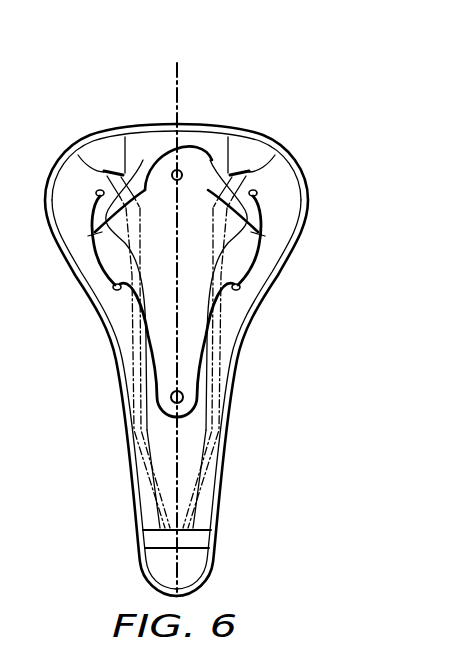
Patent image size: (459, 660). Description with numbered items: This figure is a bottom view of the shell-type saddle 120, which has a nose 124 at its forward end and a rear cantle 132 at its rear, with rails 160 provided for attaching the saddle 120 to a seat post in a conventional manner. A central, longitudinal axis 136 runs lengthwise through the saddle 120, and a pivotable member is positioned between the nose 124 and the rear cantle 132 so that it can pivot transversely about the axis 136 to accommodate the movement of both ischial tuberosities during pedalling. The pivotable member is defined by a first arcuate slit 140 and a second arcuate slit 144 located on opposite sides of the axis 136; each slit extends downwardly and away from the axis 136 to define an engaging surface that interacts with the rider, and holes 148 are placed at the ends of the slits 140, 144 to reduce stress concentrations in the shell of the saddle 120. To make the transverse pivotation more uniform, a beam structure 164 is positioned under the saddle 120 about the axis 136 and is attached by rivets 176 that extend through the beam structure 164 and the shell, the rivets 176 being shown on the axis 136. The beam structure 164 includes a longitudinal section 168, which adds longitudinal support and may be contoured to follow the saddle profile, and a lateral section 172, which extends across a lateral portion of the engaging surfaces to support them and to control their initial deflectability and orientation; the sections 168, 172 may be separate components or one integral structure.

The saddle 120 is at (234, 397).
The nose 124 is at (213, 548).
The rear cantle 132 is at (188, 128).
The central, longitudinal axis 136 is at (178, 64).
The first arcuate slit 140 is at (94, 262).
The second arcuate slit 144 is at (240, 288).
The holes 148 is at (80, 156).
The rails 160 is at (155, 492).
The beam structure 164 is at (228, 140).
The longitudinal section 168 is at (148, 346).
The lateral section 172 is at (95, 234).
The rivets 176 is at (171, 172).